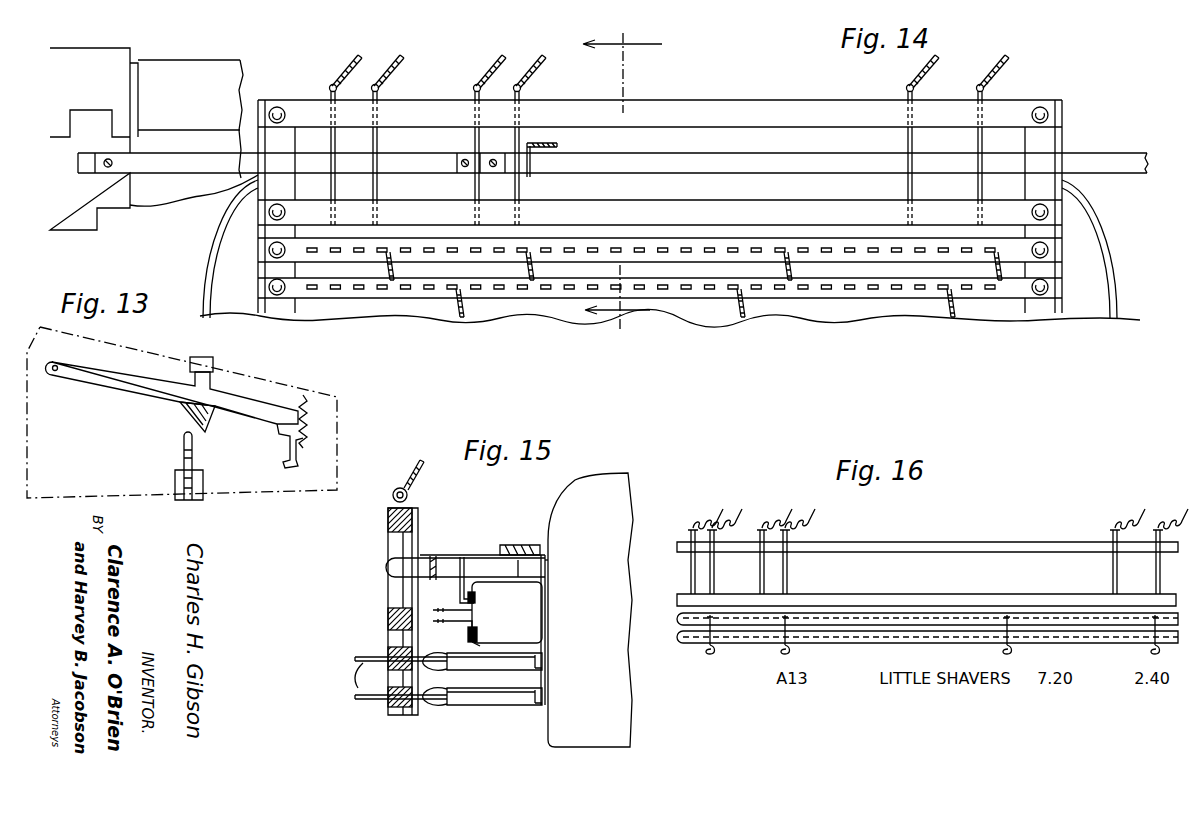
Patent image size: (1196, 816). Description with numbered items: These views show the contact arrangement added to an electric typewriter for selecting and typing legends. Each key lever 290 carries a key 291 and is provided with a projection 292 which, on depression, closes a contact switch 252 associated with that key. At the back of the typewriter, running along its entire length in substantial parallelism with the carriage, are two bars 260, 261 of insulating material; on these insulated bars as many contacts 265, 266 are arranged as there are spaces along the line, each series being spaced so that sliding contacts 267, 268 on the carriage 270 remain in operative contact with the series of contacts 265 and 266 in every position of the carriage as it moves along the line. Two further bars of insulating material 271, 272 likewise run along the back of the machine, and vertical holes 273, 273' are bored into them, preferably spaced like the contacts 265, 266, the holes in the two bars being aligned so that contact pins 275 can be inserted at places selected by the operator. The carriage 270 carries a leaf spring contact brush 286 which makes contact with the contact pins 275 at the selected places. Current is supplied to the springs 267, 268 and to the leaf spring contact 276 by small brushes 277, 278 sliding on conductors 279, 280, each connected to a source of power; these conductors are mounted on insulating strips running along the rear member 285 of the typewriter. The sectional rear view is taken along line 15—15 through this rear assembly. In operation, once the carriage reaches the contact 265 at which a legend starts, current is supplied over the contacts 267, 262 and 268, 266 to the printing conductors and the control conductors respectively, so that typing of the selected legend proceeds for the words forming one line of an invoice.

In FIG. 14, the section line 15 is at (622, 184).
In FIG. 13, the contact switch 252 is at (183, 444).
In FIG. 14, the insulating bar 260 is at (858, 294).
In FIG. 14, the insulating bar 261 is at (683, 268).
In FIG. 15, the insulating bar 261 is at (355, 658).
In FIG. 16, the insulating bar 261 is at (930, 590).
In FIG. 15, the contact 262 is at (392, 702).
In FIG. 16, the contact 262 is at (790, 641).
In FIG. 14, the contact 265 is at (333, 294).
In FIG. 15, the contact 265 is at (420, 700).
In FIG. 16, the contact 265 is at (765, 633).
In FIG. 14, the contact 266 is at (478, 248).
In FIG. 15, the contact 266 is at (428, 668).
In FIG. 16, the contact 266 is at (1097, 622).
In FIG. 15, the sliding contact 267 is at (465, 702).
In FIG. 15, the sliding contact 268 is at (512, 668).
In FIG. 15, the carriage 270 is at (572, 738).
In FIG. 14, the insulating bar 271 is at (672, 160).
In FIG. 15, the insulating bar 271 is at (385, 612).
In FIG. 16, the insulating bar 271 is at (925, 600).
In FIG. 14, the insulating bar 272 is at (727, 108).
In FIG. 15, the insulating bar 272 is at (385, 522).
In FIG. 16, the insulating bar 272 is at (928, 548).
In FIG. 14, the vertical hole 273 is at (460, 140).
In FIG. 15, the vertical hole 273 is at (402, 587).
In FIG. 16, the vertical hole 273 is at (767, 538).
In FIG. 14, the vertical hole 273' is at (549, 140).
In FIG. 14, the contact pin 275 is at (375, 140).
In FIG. 15, the contact pin 275 is at (400, 548).
In FIG. 16, the contact pin 275 is at (714, 575).
In FIG. 14, the leaf spring contact 276 is at (517, 137).
In FIG. 15, the leaf spring contact 276 is at (520, 550).
In FIG. 16, the leaf spring contact 276 is at (788, 572).
In FIG. 15, the small brush 277 is at (468, 592).
In FIG. 15, the small brush 278 is at (478, 642).
In FIG. 15, the conductor 279 is at (472, 592).
In FIG. 15, the conductor 280 is at (475, 632).
In FIG. 15, the rear member 285 is at (532, 625).
In FIG. 15, the leaf spring contact brush 286 is at (422, 565).
In FIG. 16, the leaf spring contact brush 286 is at (1113, 572).
In FIG. 13, the key lever 290 is at (105, 383).
In FIG. 13, the key 291 is at (213, 364).
In FIG. 13, the projection 292 is at (216, 418).